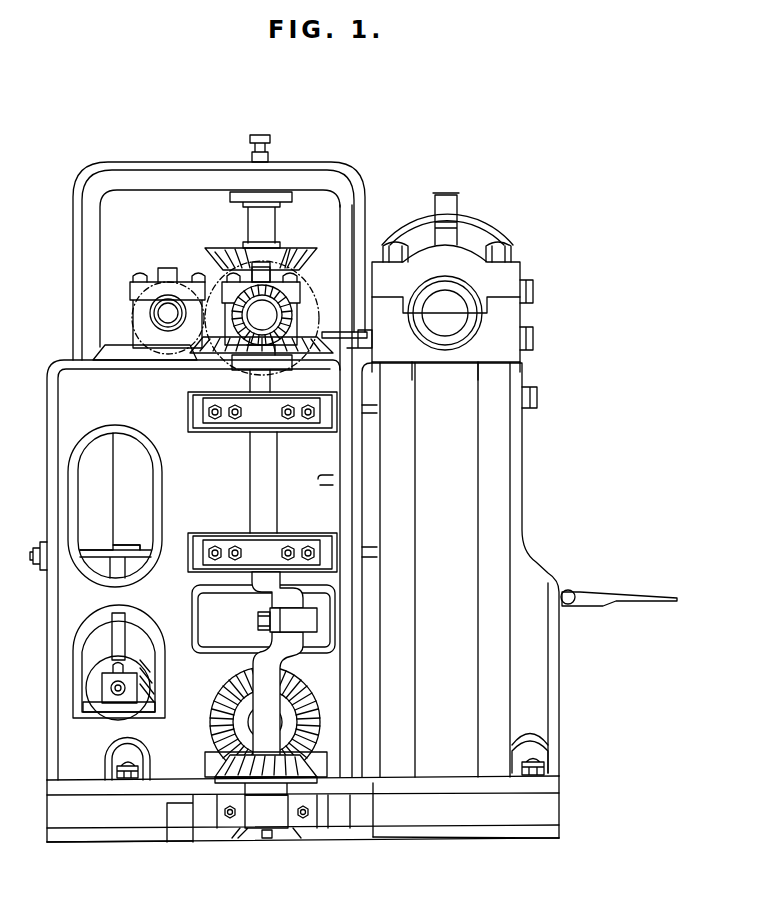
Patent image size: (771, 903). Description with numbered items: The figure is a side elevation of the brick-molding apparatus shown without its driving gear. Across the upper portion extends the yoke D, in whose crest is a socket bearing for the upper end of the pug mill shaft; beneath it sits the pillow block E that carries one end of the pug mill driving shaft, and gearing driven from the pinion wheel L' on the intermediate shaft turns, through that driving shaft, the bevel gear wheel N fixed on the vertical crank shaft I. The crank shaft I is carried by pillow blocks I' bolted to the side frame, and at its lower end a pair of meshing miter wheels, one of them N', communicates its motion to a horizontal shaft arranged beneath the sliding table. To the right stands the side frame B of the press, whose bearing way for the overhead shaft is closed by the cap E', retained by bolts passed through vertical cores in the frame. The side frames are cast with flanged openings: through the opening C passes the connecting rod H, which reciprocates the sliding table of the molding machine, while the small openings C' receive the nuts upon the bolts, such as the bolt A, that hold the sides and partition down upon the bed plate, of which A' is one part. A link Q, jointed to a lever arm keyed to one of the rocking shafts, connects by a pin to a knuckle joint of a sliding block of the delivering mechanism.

The yoke D is at (88, 255).
The pinion wheel L' is at (167, 305).
The bevel gear wheel N is at (261, 344).
The pillow block E is at (268, 318).
The cap E' is at (466, 311).
The side frame of press B is at (519, 570).
The link Q is at (143, 547).
The crank shaft I is at (291, 451).
The pillow block I' is at (262, 482).
The opening C is at (239, 664).
The connecting rod H is at (277, 620).
The miter wheel N' is at (271, 774).
The opening C' is at (313, 745).
The bolt A is at (351, 764).
The bed plate part A' is at (120, 825).